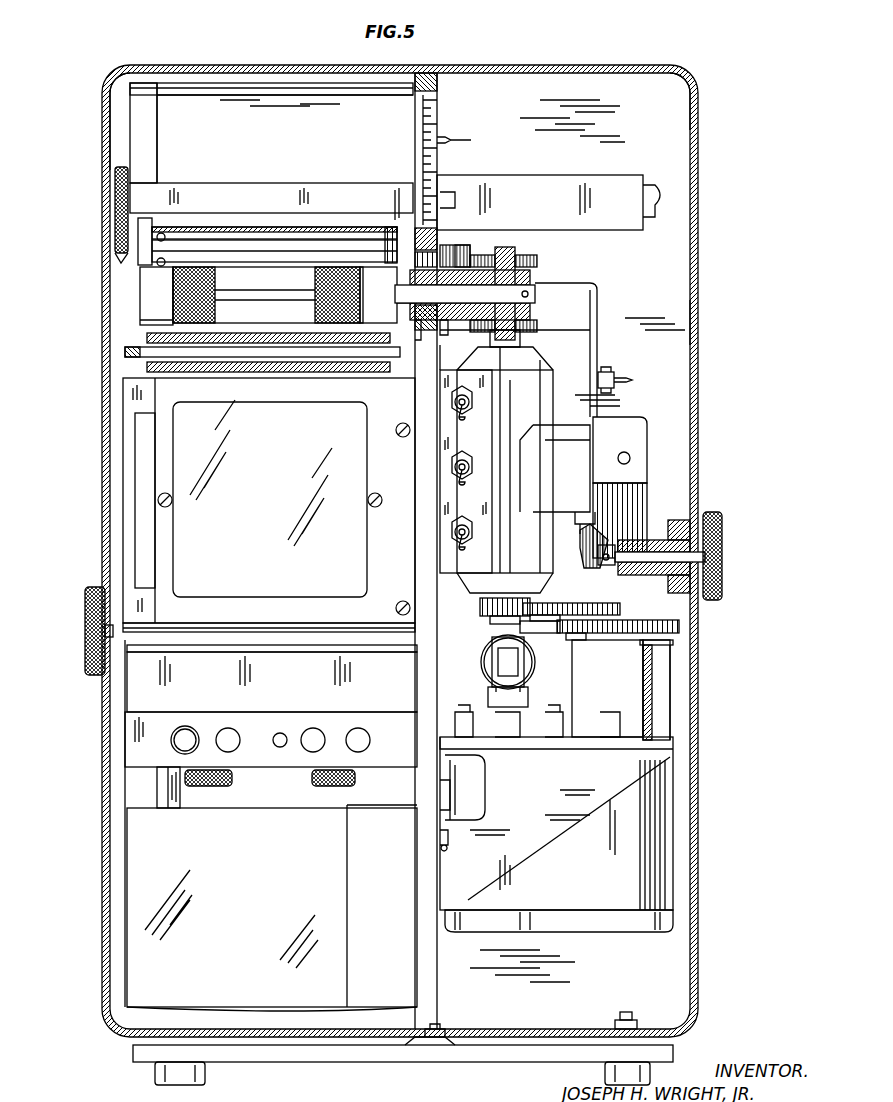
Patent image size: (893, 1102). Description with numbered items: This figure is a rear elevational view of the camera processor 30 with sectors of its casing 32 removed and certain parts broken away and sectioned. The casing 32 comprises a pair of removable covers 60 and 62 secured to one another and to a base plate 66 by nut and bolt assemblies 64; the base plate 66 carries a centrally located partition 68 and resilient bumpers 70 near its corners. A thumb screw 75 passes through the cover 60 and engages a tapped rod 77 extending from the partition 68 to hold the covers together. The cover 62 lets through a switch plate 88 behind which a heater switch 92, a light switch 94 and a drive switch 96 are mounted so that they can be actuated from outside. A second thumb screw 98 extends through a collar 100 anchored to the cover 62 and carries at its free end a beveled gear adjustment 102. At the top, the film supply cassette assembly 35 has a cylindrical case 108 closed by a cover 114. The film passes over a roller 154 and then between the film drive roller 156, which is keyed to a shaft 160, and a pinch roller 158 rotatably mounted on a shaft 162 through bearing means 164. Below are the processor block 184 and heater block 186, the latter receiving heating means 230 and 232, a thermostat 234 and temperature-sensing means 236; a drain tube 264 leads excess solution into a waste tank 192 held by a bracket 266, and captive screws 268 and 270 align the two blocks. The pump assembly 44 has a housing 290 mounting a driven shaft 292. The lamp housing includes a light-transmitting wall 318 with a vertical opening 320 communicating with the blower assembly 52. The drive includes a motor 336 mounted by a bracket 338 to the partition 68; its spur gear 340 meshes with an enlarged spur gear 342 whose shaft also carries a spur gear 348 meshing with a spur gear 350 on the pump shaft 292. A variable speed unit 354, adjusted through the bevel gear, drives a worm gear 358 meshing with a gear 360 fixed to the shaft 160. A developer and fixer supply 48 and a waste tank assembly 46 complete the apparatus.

The camera processor 30 is at (700, 72).
The casing 32 is at (698, 119).
The film supply cassette assembly 35 is at (250, 82).
The pump assembly 44 is at (672, 662).
The waste tank assembly 46 is at (128, 973).
The developer and fixer supply 48 is at (437, 120).
The blower assembly 52 is at (652, 462).
The cover 60 is at (103, 134).
The cover 62 is at (698, 324).
The nut and bolt assemblies 64 is at (635, 1018).
The base plate 66 is at (522, 1062).
The partition 68 is at (423, 486).
The resilient bumpers 70 is at (200, 1080).
The thumb screw 75 is at (85, 611).
The tapped rod 77 is at (234, 630).
The switch plate 88 is at (545, 440).
The heater switch 92 is at (455, 405).
The light switch 94 is at (467, 457).
The drive switch 96 is at (465, 523).
The thumb screw 98 is at (722, 570).
The collar 100 is at (668, 525).
The beveled gear adjustment 102 is at (590, 568).
The cylindrical case 108 is at (198, 95).
The cover 114 is at (143, 128).
The roller 154 is at (272, 368).
The film drive roller 156 is at (280, 282).
The pinch roller 158 is at (172, 282).
The shaft 160 is at (532, 290).
The shaft 162 is at (155, 247).
The bearing means 164 is at (176, 262).
The processor block 184 is at (135, 693).
The heater block 186 is at (170, 722).
The waste tank 192 is at (143, 925).
The heating means 230 is at (366, 733).
The heating means 232 is at (228, 728).
The thermostat 234 is at (313, 728).
The temperature-sensing means 236 is at (280, 733).
The drain tube 264 is at (188, 808).
The bracket 266 is at (347, 868).
The captive screw 268 is at (332, 786).
The captive screw 270 is at (215, 785).
The housing 290 is at (670, 684).
The shaft 292 is at (630, 640).
The light-transmitting wall 318 is at (185, 524).
The opening 320 is at (143, 432).
The motor 336 is at (665, 826).
The bracket 338 is at (640, 773).
The spur gear 340 is at (482, 612).
The enlarged spur gear 342 is at (600, 607).
The spur gear 348 is at (538, 650).
The spur gear 350 is at (680, 626).
The variable speed unit 354 is at (540, 378).
The worm gear 358 is at (535, 268).
The gear 360 is at (505, 253).